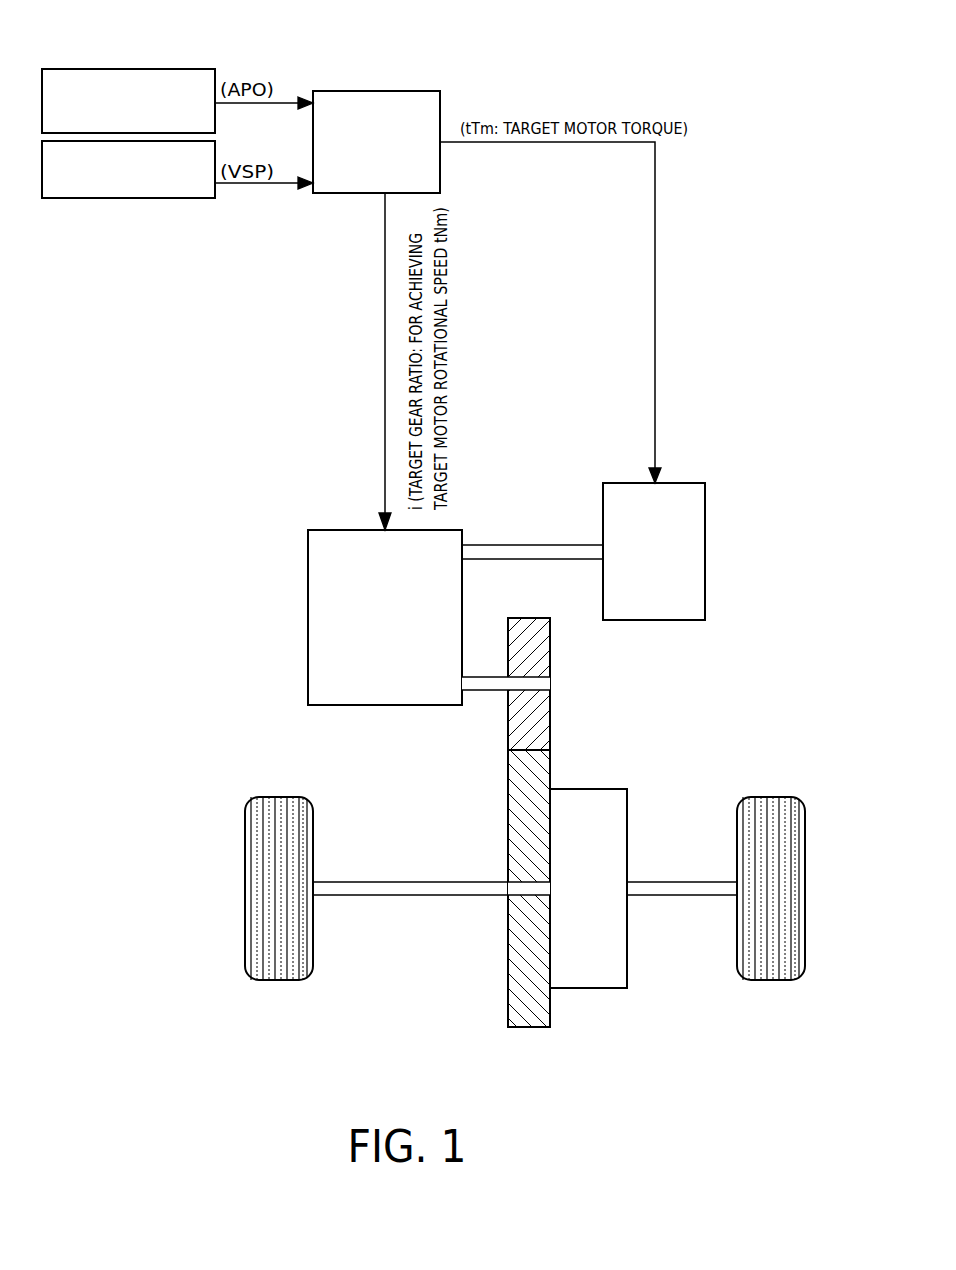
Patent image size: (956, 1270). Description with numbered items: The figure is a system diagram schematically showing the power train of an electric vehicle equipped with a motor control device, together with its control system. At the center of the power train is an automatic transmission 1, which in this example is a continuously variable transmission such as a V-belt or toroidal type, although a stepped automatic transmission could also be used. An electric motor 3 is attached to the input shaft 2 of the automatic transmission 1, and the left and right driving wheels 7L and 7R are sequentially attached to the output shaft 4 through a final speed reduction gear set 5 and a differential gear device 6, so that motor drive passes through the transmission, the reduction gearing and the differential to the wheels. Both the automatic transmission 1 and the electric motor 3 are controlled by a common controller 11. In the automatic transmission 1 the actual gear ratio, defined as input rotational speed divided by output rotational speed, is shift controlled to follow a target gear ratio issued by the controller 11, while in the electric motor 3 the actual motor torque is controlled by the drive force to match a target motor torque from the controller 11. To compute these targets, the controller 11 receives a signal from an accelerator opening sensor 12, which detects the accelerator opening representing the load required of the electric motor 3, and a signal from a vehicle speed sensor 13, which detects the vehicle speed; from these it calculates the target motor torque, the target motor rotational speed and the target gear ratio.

The automatic transmission 1 is at (331, 530).
The input shaft 2 is at (528, 545).
The electric motor 3 is at (676, 483).
The output shaft 4 is at (480, 677).
The final speed reduction gear set 5 is at (550, 730).
The differential gear device 6 is at (627, 835).
The left driving wheel 7L is at (285, 797).
The right driving wheel 7R is at (772, 797).
The controller 11 is at (402, 91).
The accelerator opening sensor 12 is at (88, 69).
The vehicle speed sensor 13 is at (88, 198).